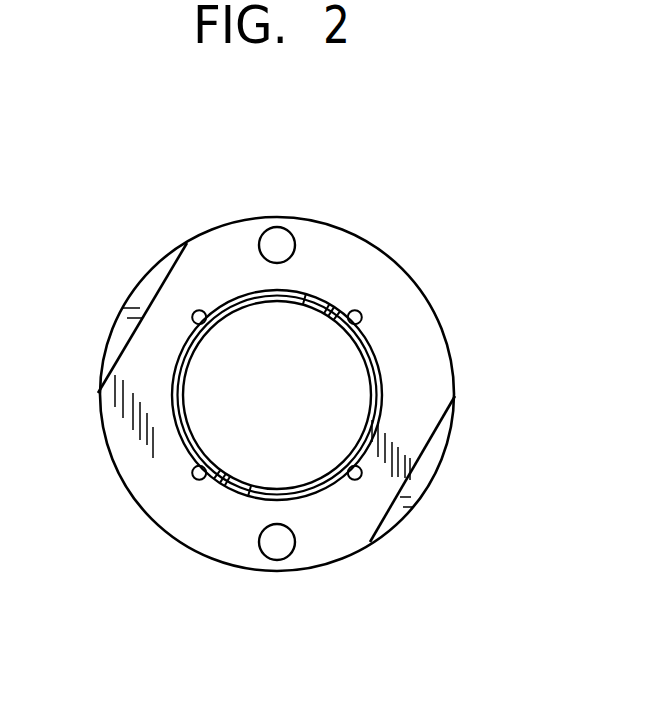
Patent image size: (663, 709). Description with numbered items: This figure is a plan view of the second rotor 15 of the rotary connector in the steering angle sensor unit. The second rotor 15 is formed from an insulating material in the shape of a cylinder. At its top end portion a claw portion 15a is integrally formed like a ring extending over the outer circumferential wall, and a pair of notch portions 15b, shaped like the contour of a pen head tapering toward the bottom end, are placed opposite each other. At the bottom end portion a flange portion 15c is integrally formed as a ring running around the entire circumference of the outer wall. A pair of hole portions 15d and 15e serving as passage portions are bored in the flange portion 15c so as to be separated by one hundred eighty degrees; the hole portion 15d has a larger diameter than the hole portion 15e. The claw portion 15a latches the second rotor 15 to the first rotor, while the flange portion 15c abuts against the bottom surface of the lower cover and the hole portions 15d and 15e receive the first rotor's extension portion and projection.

The second rotor 15 is at (419, 244).
The claw portion 15a is at (240, 293).
The notch portions 15b is at (327, 304).
The flange portion 15c is at (415, 357).
The hole portion 15d is at (276, 540).
The hole portion 15e is at (278, 243).